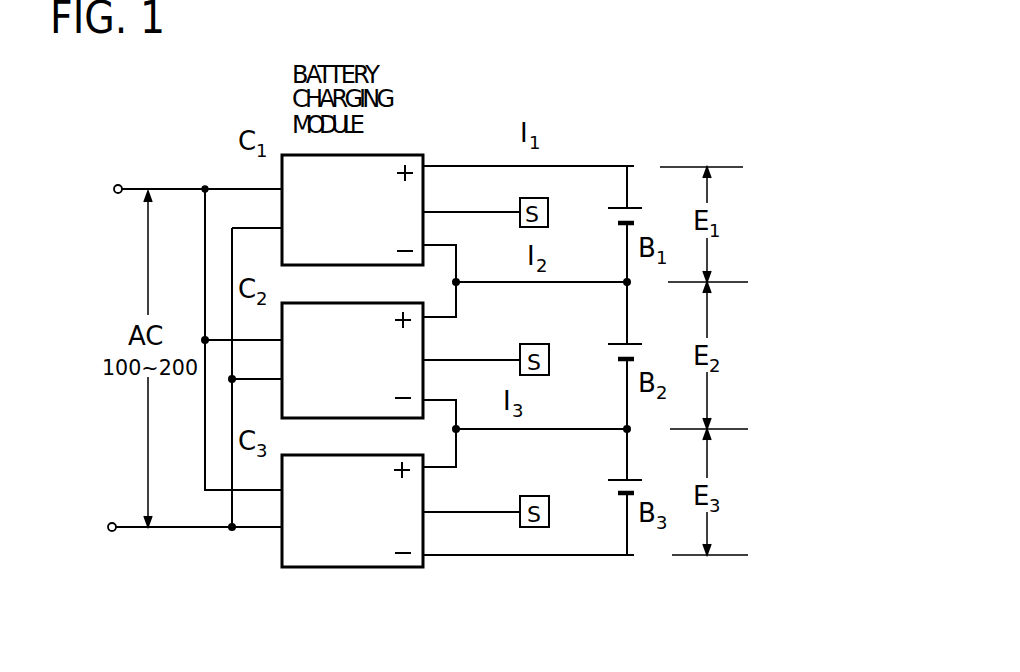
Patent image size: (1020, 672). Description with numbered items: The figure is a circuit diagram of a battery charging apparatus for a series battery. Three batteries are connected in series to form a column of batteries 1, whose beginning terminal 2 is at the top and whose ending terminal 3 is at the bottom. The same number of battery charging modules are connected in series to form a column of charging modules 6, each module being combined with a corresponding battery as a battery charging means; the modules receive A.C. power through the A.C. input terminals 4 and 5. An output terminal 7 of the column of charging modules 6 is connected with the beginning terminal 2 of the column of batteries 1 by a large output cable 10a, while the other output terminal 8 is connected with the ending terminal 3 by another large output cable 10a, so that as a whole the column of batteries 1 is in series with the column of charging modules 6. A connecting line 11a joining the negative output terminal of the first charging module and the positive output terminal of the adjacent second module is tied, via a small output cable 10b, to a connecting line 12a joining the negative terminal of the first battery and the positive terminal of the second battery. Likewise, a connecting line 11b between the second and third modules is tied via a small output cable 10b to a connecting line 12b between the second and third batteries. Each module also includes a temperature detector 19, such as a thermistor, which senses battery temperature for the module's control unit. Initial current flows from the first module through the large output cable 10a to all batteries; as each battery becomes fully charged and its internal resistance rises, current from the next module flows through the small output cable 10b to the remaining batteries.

The column of batteries 1 is at (642, 171).
The positive terminal of battery pack 2 is at (627, 164).
The ending terminal 3 is at (626, 557).
The A.C. input terminal 4 is at (121, 185).
The A.C. input terminal 5 is at (115, 533).
The column of charging modules 6 is at (226, 182).
The output terminal 7 is at (426, 161).
The other output terminal 8 is at (428, 570).
The large output cable 10a is at (488, 169).
The small output cable 10b is at (482, 285).
The connecting line 11a is at (458, 263).
The connecting line 11b is at (458, 468).
The connecting line 12a is at (627, 313).
The connecting line 12b is at (627, 452).
The temperature detector 19 is at (549, 211).